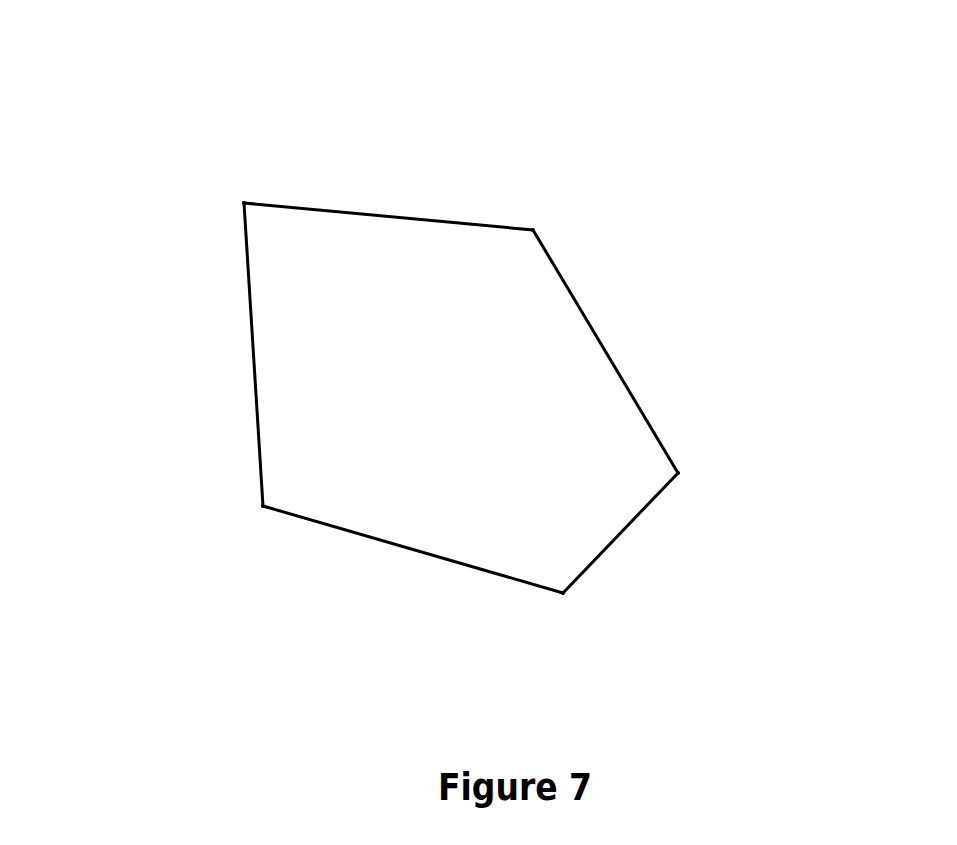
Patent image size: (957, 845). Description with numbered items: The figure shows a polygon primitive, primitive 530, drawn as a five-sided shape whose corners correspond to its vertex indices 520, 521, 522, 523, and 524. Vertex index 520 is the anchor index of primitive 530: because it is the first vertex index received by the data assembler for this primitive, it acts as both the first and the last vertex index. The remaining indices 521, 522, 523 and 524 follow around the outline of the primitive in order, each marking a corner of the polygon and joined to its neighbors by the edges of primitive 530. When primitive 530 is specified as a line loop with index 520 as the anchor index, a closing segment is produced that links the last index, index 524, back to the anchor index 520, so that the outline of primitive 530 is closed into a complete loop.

The vertex index 520 is at (244, 203).
The vertex index 521 is at (533, 230).
The vertex index 522 is at (678, 473).
The vertex index 523 is at (563, 593).
The vertex index 524 is at (263, 506).
The primitive 530 is at (415, 443).